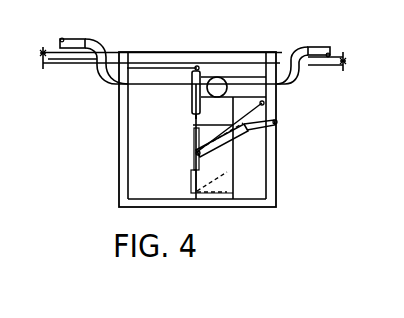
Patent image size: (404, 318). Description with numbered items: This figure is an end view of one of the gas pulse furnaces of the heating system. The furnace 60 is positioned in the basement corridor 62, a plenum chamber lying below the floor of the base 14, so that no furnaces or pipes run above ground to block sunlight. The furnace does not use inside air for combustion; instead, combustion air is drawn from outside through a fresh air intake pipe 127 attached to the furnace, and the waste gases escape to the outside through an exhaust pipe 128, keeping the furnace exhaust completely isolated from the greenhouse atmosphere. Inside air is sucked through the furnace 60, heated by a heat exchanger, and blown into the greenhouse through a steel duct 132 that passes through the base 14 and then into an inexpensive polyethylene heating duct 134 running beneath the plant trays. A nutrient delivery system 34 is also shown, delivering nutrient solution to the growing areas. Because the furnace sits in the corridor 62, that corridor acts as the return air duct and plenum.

The base 14 is at (282, 52).
The nutrient delivery system 34 is at (266, 104).
The furnace 60 is at (233, 158).
The basement corridor 62 is at (169, 148).
The fresh air intake pipe 127 is at (73, 68).
The exhaust pipe 128 is at (278, 124).
The steel duct 132 is at (296, 73).
The polyethylene heating duct 134 is at (309, 47).